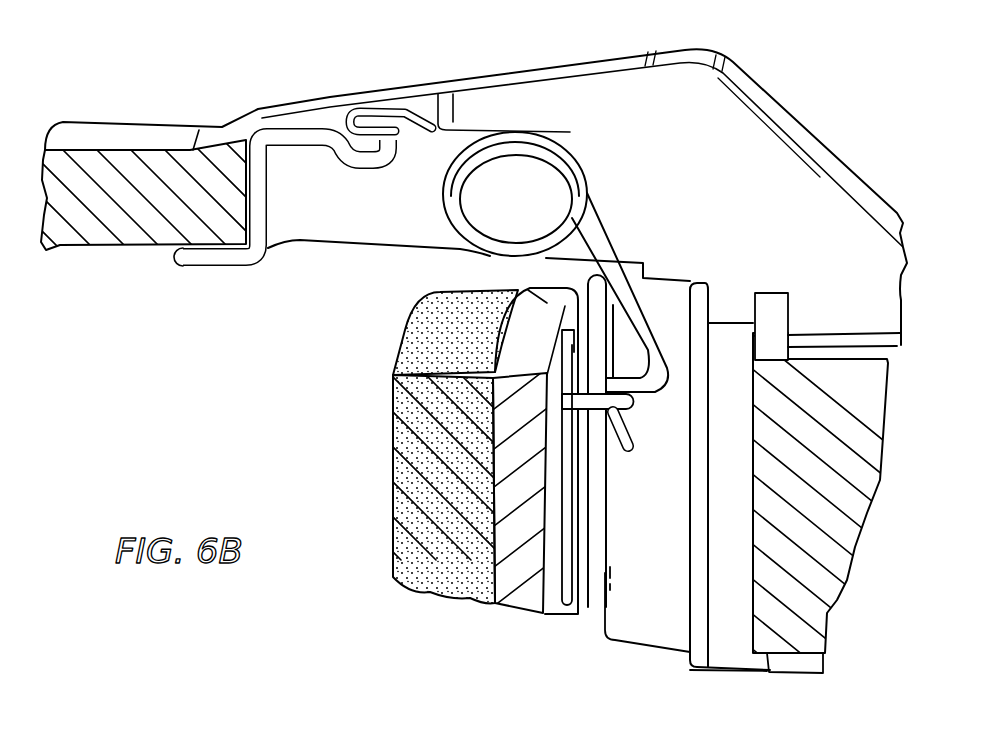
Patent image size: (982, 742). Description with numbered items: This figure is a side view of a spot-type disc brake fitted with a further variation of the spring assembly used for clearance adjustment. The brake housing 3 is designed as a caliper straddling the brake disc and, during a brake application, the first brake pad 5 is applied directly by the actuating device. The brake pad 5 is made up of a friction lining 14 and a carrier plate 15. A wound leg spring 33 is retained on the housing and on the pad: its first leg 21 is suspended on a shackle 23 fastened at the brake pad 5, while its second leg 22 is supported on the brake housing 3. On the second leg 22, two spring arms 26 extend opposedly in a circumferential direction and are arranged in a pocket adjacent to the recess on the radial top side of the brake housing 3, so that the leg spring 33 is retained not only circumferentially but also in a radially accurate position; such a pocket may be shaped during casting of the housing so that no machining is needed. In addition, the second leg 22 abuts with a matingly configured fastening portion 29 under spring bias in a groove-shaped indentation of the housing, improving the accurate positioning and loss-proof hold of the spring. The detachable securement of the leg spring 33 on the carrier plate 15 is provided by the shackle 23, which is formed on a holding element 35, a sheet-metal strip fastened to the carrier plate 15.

The brake housing 3 is at (108, 130).
The brake pad 5 is at (472, 631).
The friction lining 14 is at (432, 575).
The carrier plate 15 is at (540, 305).
The first leg 21 is at (651, 325).
The second leg 22 is at (277, 145).
The shackle 23 is at (651, 422).
The spring arms 26 is at (372, 118).
The fastening portion 29 is at (227, 264).
The leg spring 33 is at (524, 126).
The holding element 35 is at (571, 552).